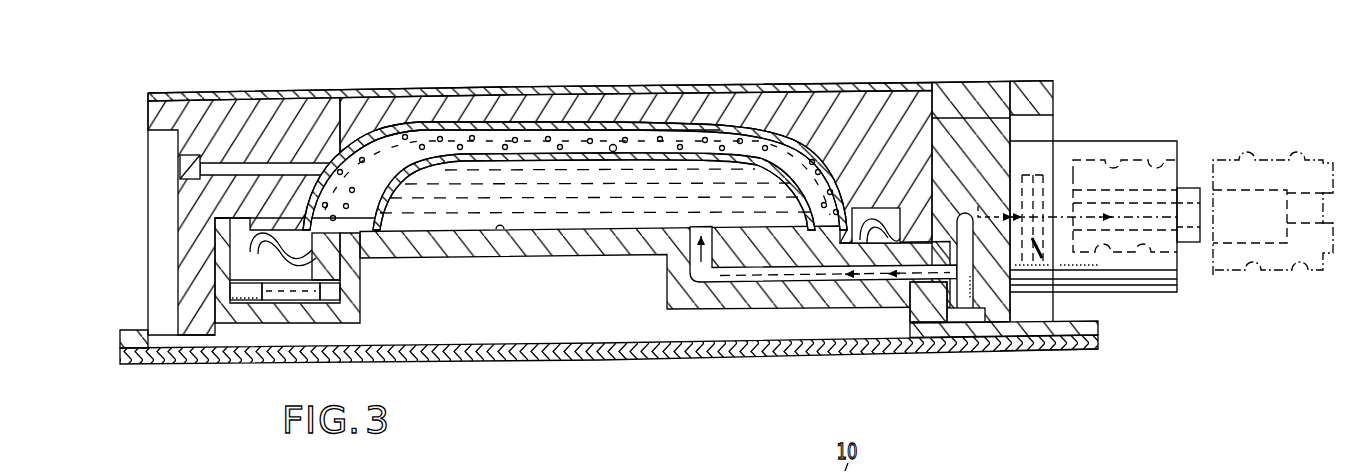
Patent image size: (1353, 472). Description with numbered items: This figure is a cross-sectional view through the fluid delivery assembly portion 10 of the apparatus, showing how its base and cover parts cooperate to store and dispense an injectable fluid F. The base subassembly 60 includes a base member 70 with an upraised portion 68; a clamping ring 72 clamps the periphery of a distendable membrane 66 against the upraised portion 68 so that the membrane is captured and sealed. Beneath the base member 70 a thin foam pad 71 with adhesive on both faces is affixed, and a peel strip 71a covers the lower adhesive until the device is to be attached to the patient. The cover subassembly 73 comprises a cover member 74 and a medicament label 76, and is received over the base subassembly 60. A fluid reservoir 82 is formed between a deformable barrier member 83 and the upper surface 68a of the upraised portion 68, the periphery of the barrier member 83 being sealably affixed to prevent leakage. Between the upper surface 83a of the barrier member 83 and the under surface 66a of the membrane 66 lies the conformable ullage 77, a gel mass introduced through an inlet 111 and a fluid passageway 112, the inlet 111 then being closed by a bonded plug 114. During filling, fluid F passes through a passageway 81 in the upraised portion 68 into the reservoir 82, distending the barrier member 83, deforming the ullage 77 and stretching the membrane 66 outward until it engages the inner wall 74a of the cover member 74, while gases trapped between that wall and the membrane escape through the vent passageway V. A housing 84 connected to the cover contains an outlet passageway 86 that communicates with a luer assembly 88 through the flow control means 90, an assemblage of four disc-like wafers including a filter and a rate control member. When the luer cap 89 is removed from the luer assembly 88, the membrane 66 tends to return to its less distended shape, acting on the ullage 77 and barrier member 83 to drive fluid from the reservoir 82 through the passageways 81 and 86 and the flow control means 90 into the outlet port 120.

The fluid delivery assembly portion 10 is at (300, 72).
The base subassembly 60 is at (1102, 335).
The distendable membrane 66 is at (581, 130).
The under surface of membrane 66a is at (385, 137).
The upraised portion 68 is at (566, 260).
The upper surface of upraised portion 68a is at (507, 232).
The base member 70 is at (920, 330).
The foam pad 71 is at (987, 340).
The peel strip 71a is at (1048, 352).
The clamping ring 72 is at (214, 232).
The cover subassembly 73 is at (940, 78).
The cover member 74 is at (729, 90).
The inner wall of cover member 74a is at (651, 130).
The medicament label 76 is at (805, 86).
The conformable ullage 77 is at (434, 140).
The passageway 81 is at (783, 284).
The fluid reservoir 82 is at (478, 175).
The barrier member 83 is at (533, 154).
The upper surface of barrier member 83a is at (613, 152).
The housing 84 is at (1060, 98).
The outlet passageway 86 is at (978, 206).
The luer assembly 88 is at (1080, 141).
The luer cap 89 is at (1318, 150).
The flow control means 90 is at (1060, 297).
The inlet 111 is at (238, 302).
The fluid passageway 112 is at (326, 306).
The bonded plug 114 is at (253, 302).
The outlet port 120 is at (1190, 180).
The injectable fluid F is at (475, 210).
The vent passageway V is at (179, 173).